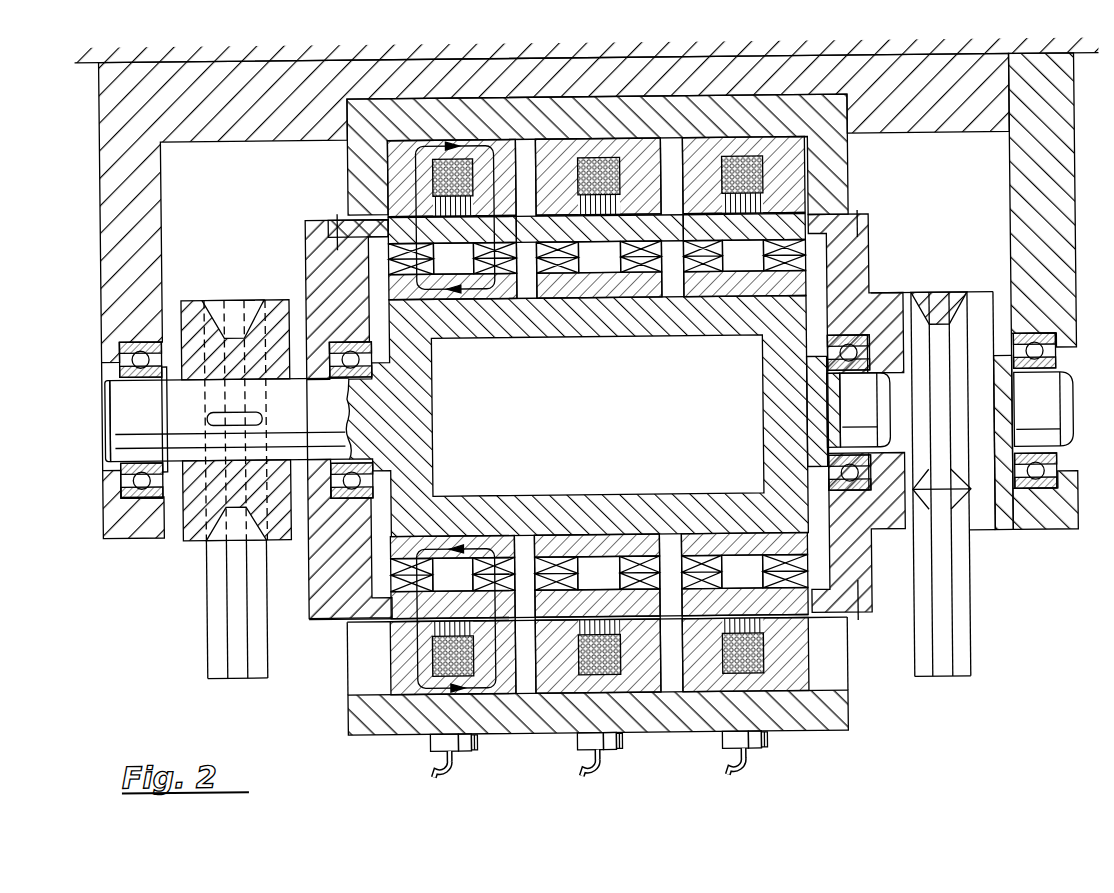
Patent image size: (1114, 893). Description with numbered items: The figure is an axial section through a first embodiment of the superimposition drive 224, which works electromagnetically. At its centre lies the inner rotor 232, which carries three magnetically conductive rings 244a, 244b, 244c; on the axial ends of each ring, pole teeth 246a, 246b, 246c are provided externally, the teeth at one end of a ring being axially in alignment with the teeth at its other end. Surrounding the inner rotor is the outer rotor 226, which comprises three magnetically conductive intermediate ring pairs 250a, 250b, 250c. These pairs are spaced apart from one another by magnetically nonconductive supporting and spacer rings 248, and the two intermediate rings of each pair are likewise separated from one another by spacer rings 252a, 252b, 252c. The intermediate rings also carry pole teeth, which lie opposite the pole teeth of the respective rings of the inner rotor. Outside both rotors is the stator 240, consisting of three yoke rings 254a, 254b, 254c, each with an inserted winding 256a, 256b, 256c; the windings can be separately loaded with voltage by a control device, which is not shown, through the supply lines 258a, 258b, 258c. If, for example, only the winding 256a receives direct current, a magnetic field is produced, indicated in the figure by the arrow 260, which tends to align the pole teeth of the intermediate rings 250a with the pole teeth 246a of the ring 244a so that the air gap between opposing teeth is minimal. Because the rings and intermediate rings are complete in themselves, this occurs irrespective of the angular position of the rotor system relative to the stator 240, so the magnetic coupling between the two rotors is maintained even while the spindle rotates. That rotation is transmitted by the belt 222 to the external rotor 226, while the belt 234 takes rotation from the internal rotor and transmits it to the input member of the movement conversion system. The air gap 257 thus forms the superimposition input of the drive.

The belt 222 is at (958, 601).
The superimposition drive 224 is at (275, 265).
The outer rotor 226 is at (860, 266).
The inner rotor 232 is at (440, 450).
The belt 234 is at (212, 600).
The stator 240 is at (359, 113).
The magnetically conductive ring 244a is at (497, 283).
The magnetically conductive ring 244b is at (635, 283).
The magnetically conductive ring 244c is at (745, 283).
The pole teeth 246a is at (450, 283).
The pole teeth 246b is at (585, 283).
The pole teeth 246c is at (705, 283).
The supporting and spacer rings 248 is at (527, 290).
The intermediate ring pair 250a is at (418, 214).
The intermediate ring pair 250b is at (560, 230).
The intermediate ring pair 250c is at (700, 226).
The spacer ring 252a is at (453, 417).
The spacer ring 252b is at (599, 415).
The spacer ring 252c is at (742, 414).
The yoke ring 254a is at (406, 178).
The yoke ring 254b is at (597, 157).
The yoke ring 254c is at (789, 174).
The winding 256a is at (435, 176).
The winding 256b is at (600, 160).
The winding 256c is at (768, 174).
The air gap 257 is at (379, 596).
The supply line 258a is at (433, 765).
The supply line 258b is at (580, 765).
The supply line 258c is at (726, 765).
The arrow 260 is at (421, 292).